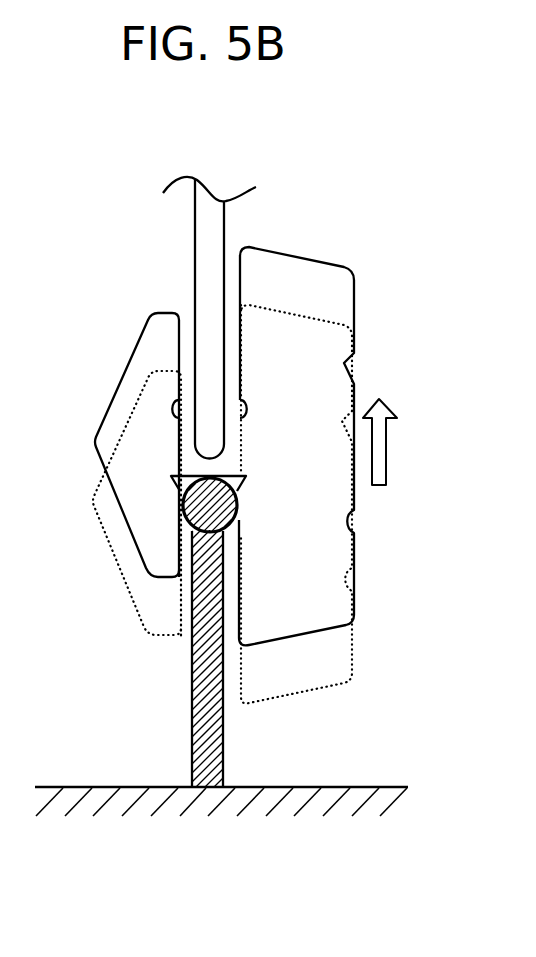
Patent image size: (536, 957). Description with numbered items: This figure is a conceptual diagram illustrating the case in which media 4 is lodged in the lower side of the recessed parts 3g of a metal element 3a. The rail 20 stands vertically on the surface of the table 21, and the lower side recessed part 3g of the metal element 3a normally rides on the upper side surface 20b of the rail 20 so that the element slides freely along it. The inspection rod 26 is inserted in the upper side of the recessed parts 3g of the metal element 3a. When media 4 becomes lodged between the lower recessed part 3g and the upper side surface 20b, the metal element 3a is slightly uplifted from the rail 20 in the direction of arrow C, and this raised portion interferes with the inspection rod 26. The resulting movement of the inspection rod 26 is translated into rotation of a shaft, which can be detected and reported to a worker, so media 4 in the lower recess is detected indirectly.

The metal element 3a is at (96, 416).
The recessed part 3g is at (189, 309).
The media 4 is at (212, 476).
The rail 20 is at (192, 733).
The upper side surface of the rail 20b is at (236, 514).
The table 21 is at (297, 787).
The inspection rod 26 is at (224, 232).
The arrow C is at (386, 440).